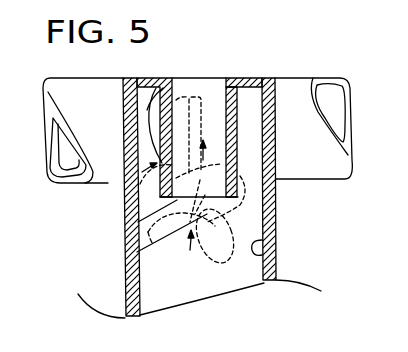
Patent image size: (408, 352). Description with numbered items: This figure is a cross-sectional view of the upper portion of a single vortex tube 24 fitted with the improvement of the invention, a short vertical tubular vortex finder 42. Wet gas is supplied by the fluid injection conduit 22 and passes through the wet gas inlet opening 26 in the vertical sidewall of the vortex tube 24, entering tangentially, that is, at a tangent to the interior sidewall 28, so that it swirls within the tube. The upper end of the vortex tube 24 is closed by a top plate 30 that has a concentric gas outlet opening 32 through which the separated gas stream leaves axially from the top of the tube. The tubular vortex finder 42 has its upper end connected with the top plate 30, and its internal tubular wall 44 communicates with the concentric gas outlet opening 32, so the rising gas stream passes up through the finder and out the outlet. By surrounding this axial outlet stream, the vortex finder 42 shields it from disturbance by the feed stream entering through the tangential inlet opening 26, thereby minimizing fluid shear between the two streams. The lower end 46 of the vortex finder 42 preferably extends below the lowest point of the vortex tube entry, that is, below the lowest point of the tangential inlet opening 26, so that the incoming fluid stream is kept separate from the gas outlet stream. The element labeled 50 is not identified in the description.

The fluid injection conduit 22 is at (107, 184).
The vortex tube 24 is at (276, 209).
The wet gas inlet opening 26 is at (157, 80).
The interior sidewall 28 is at (277, 238).
The top plate 30 is at (251, 81).
The concentric gas outlet opening 32 is at (225, 84).
The tubular vortex finder 42 is at (276, 167).
The internal tubular wall 44 is at (123, 229).
The lower end of vortex finder 46 is at (123, 260).
The flow guide 50 is at (275, 132).